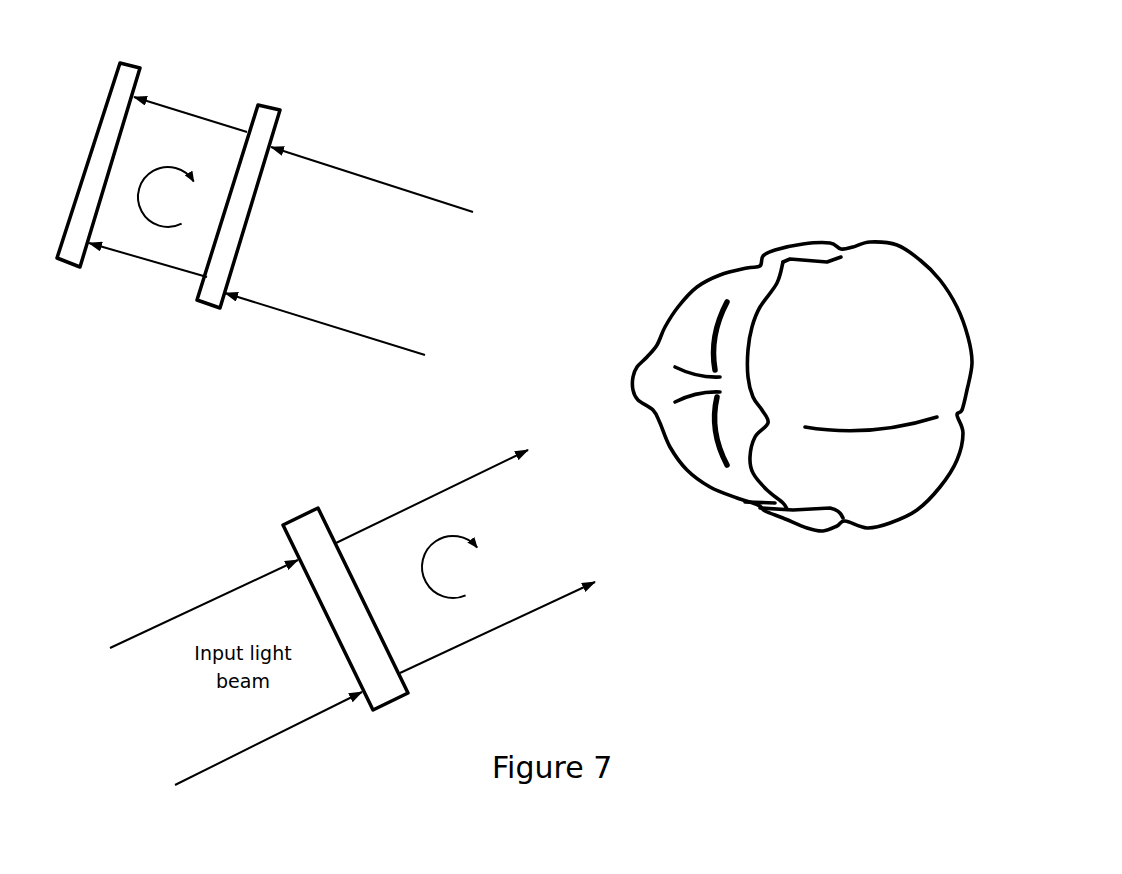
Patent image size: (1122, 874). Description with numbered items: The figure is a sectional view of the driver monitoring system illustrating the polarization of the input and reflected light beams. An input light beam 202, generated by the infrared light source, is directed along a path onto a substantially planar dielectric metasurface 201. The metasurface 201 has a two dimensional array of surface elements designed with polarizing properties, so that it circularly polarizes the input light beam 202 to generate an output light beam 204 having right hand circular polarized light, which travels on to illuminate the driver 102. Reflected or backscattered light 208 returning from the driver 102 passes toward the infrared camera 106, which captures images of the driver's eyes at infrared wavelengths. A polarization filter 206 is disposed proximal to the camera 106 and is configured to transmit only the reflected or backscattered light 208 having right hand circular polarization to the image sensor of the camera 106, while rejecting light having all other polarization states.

The driver 102 is at (872, 262).
The infrared camera 106 is at (132, 78).
The polarization filter 206 is at (268, 120).
The reflected or backscattered light 208 is at (380, 192).
The dielectric metasurface 201 is at (308, 520).
The input light beam 202 is at (180, 617).
The output light beam 204 is at (413, 512).